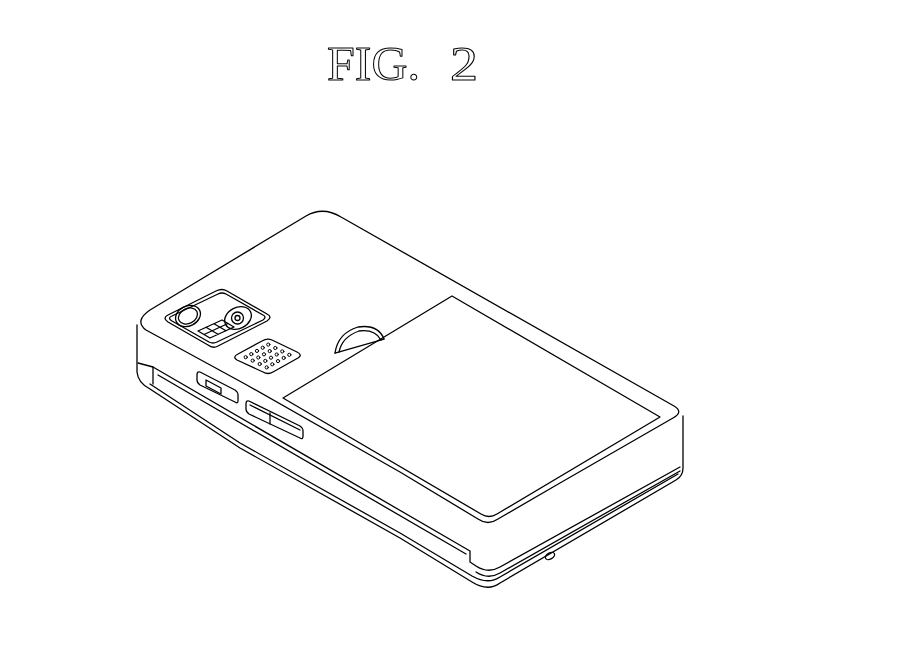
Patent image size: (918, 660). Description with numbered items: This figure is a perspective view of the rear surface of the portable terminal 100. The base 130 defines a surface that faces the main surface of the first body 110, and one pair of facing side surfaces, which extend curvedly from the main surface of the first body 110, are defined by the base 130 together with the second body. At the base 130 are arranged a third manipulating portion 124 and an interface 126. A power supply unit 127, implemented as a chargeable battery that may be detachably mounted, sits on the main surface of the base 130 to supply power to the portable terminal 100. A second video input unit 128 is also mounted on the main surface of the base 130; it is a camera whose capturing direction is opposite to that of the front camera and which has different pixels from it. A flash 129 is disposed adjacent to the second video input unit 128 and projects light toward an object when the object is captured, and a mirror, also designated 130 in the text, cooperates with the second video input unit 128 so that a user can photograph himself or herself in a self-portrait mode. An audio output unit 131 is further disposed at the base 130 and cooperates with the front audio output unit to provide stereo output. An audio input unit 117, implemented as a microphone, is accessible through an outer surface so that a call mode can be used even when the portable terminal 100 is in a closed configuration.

The portable terminal 100 is at (461, 219).
The first body 110 is at (313, 493).
The audio input unit 117 is at (557, 562).
The third manipulating portion 124 is at (258, 414).
The interface 126 is at (213, 385).
The power supply unit 127 is at (548, 386).
The second video input unit 128 is at (238, 302).
The flash 129 is at (216, 320).
The base 130 is at (179, 348).
The audio output unit 131 is at (282, 338).